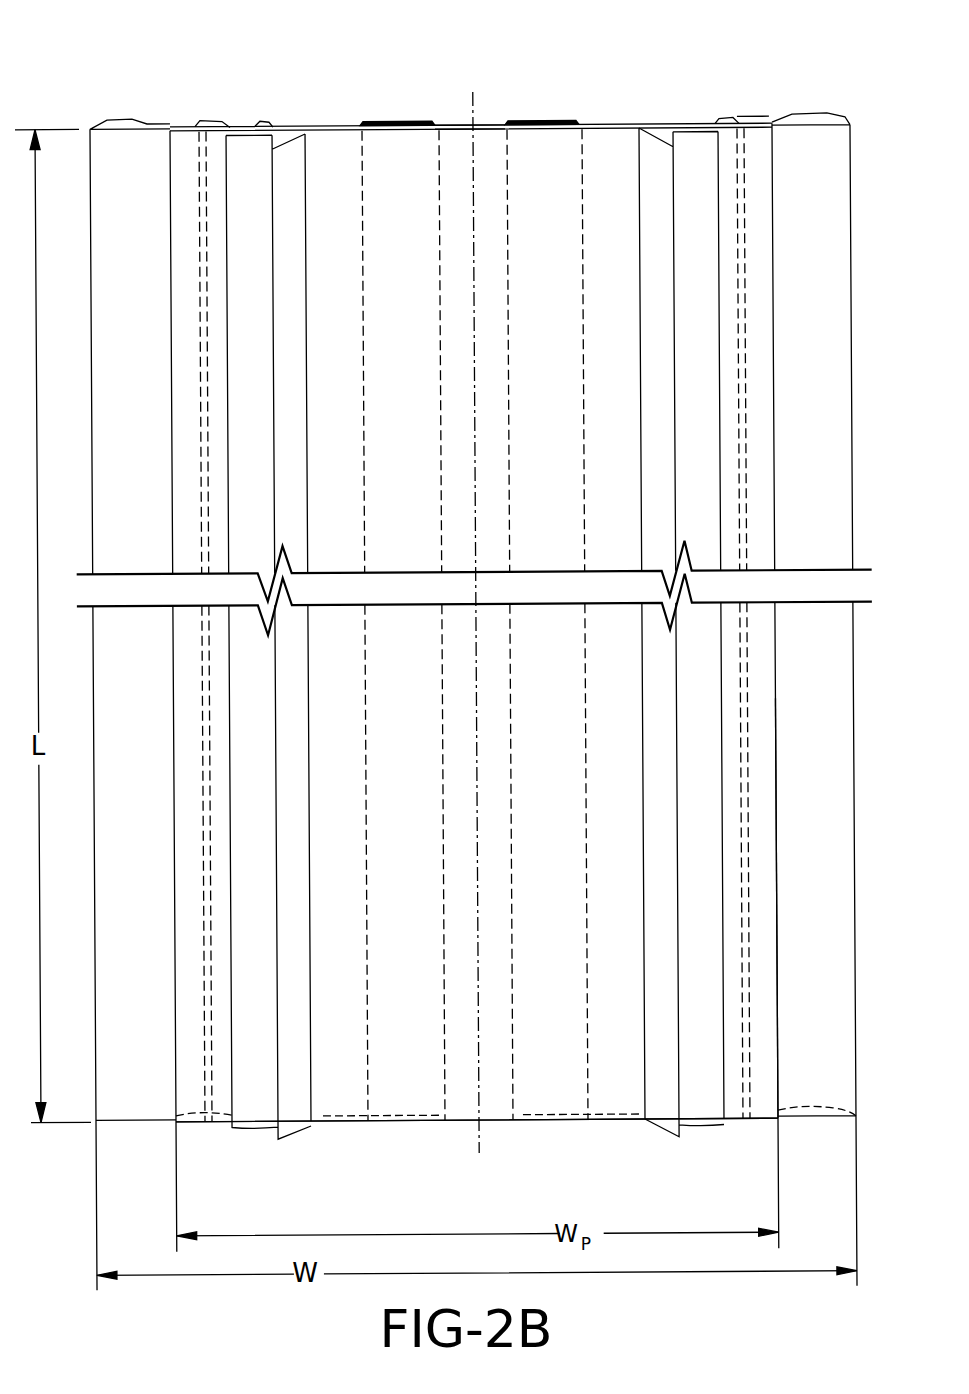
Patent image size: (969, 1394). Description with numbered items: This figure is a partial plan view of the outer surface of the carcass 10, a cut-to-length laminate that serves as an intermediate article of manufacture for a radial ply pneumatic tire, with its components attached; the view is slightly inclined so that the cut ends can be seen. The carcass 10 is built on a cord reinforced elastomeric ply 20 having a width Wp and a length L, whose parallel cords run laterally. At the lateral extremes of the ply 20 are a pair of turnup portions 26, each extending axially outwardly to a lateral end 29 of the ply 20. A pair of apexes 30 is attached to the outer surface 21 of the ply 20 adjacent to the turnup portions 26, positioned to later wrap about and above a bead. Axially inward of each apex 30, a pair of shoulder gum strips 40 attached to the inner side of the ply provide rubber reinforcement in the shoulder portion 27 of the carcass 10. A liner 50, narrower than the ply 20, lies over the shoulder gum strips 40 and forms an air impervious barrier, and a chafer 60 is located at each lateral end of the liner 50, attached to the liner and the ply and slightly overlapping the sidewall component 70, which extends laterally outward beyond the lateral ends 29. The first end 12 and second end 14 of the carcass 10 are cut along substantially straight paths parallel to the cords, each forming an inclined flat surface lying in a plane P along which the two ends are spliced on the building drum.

The carcass 10 is at (346, 84).
The first end 12 is at (329, 1140).
The second end 14 is at (226, 112).
The ply 20 is at (487, 128).
The outer surface 21 is at (763, 953).
The turnup portion 26 is at (192, 1030).
The shoulder portion 27 is at (408, 1080).
The lateral end 29 is at (173, 150).
The apex 30 is at (290, 136).
The shoulder gum strip 40 is at (390, 124).
The liner 50 is at (457, 124).
The chafer 60 is at (265, 124).
The sidewall component 70 is at (122, 126).
The plane P is at (836, 120).